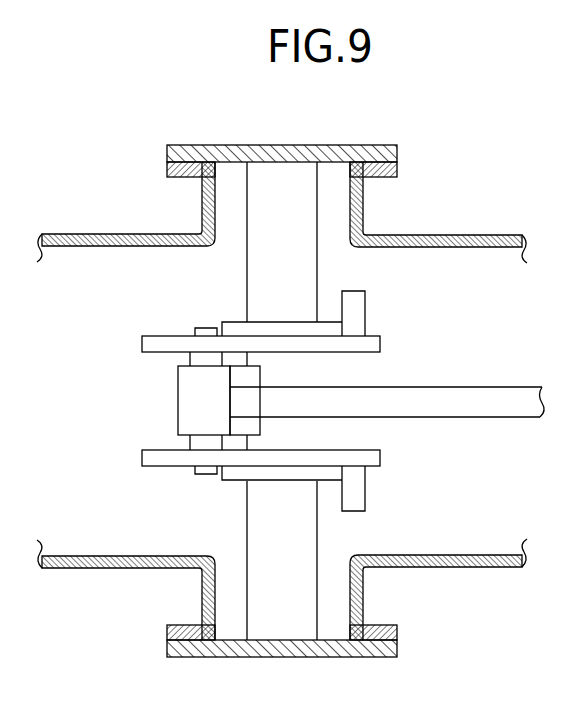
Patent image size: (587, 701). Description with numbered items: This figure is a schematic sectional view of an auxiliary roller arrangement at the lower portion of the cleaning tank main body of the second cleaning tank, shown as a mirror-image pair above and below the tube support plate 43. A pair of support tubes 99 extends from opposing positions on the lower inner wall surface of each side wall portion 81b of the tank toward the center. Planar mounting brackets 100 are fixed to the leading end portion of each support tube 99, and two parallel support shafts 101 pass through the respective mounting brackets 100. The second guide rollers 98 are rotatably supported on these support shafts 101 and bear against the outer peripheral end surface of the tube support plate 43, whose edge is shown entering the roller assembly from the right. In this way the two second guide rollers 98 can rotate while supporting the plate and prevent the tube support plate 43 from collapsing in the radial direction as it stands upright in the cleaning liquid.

The tube support plate 43 is at (518, 398).
The side wall portion 81b is at (469, 235).
The second guide roller 98 is at (190, 417).
The support tube 99 is at (312, 267).
The mounting bracket 100 is at (340, 347).
The support shaft 101 is at (197, 440).